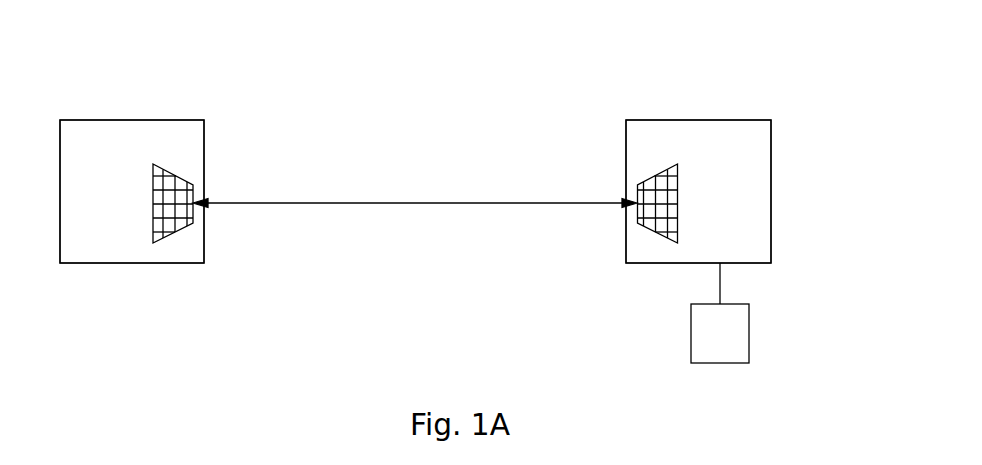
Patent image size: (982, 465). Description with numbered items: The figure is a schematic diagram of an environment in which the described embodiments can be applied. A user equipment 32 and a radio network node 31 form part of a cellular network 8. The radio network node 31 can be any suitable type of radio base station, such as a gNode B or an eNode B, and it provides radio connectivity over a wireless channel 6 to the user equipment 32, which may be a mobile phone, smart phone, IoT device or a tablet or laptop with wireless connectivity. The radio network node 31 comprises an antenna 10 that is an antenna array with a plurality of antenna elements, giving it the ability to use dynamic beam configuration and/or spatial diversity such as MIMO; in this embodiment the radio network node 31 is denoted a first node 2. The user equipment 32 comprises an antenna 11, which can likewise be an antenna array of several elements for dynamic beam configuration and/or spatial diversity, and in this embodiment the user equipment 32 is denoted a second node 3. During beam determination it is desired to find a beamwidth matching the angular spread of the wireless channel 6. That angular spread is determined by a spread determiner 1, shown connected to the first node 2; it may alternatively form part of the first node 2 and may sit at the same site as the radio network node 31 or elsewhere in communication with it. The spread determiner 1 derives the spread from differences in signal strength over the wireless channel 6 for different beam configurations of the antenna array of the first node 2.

The cellular network 8 is at (813, 81).
The second node 3 is at (88, 120).
The user equipment 32 is at (185, 120).
The antenna 11 is at (188, 222).
The wireless channel 6 is at (413, 203).
The radio network node 31 is at (724, 120).
The first node 2 is at (771, 217).
The antenna 10 is at (643, 222).
The spread determiner 1 is at (729, 347).